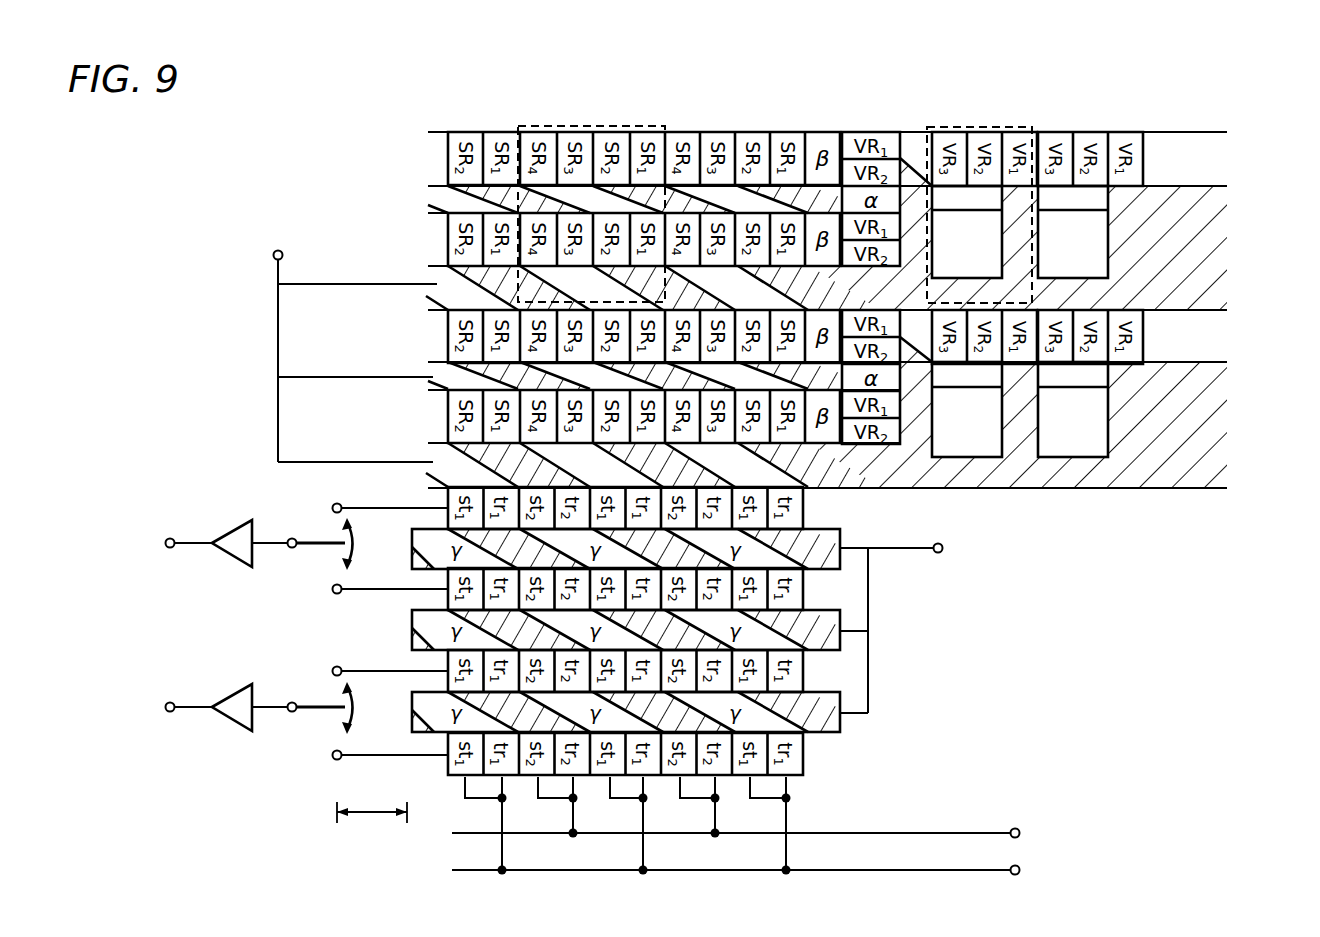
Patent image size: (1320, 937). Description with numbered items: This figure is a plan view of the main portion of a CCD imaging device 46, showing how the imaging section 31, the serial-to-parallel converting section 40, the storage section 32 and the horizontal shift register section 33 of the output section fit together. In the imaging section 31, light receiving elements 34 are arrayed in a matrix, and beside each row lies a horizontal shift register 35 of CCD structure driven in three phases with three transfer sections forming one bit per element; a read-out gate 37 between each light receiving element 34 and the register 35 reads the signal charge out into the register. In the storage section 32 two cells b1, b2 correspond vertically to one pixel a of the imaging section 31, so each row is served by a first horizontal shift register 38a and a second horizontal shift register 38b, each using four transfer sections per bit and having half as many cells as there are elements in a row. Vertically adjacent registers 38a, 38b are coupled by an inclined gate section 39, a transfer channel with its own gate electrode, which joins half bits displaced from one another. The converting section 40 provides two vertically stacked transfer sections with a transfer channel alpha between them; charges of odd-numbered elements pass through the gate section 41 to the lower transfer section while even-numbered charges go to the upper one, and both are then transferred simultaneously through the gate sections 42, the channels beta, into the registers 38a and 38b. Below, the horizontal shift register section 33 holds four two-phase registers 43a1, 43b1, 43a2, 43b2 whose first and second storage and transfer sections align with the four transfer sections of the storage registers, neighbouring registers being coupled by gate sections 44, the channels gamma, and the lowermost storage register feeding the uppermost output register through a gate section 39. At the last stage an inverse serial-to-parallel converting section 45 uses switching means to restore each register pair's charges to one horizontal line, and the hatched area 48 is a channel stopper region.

The solid state imaging device 46 is at (238, 164).
The storage section 32 is at (842, 91).
The serial-to-parallel converting section 40 is at (932, 91).
The imaging section 31 is at (1237, 93).
The horizontal shift register 35 is at (1212, 132).
The gate section 42 is at (815, 131).
The gate section 41 is at (925, 182).
The read-out gate 37 is at (1095, 198).
The light receiving element 34 is at (1095, 248).
The first horizontal shift register 38a is at (448, 132).
The second horizontal shift register 38b is at (448, 240).
The gate section 39 is at (455, 198).
The cell b1 is at (545, 127).
The cell b2 is at (515, 284).
The pixel a is at (997, 126).
The horizontal shift register section 33 is at (960, 767).
The horizontal shift register 43a1 is at (803, 505).
The horizontal shift register 43b1 is at (803, 593).
The horizontal shift register 43a2 is at (803, 672).
The horizontal shift register 43b2 is at (803, 752).
The gate section 44 is at (740, 778).
The serial-to-parallel converting section 45 is at (372, 825).
The channel stopper region 48 is at (1197, 488).